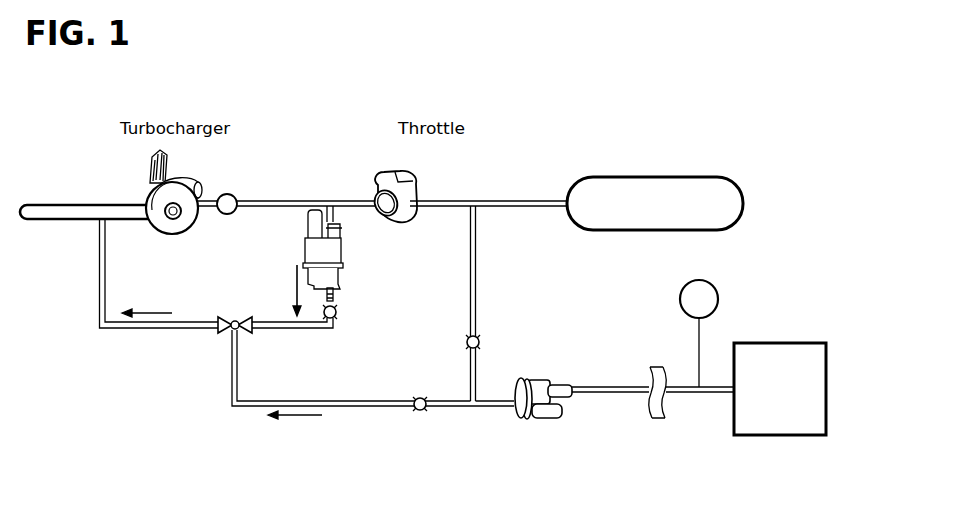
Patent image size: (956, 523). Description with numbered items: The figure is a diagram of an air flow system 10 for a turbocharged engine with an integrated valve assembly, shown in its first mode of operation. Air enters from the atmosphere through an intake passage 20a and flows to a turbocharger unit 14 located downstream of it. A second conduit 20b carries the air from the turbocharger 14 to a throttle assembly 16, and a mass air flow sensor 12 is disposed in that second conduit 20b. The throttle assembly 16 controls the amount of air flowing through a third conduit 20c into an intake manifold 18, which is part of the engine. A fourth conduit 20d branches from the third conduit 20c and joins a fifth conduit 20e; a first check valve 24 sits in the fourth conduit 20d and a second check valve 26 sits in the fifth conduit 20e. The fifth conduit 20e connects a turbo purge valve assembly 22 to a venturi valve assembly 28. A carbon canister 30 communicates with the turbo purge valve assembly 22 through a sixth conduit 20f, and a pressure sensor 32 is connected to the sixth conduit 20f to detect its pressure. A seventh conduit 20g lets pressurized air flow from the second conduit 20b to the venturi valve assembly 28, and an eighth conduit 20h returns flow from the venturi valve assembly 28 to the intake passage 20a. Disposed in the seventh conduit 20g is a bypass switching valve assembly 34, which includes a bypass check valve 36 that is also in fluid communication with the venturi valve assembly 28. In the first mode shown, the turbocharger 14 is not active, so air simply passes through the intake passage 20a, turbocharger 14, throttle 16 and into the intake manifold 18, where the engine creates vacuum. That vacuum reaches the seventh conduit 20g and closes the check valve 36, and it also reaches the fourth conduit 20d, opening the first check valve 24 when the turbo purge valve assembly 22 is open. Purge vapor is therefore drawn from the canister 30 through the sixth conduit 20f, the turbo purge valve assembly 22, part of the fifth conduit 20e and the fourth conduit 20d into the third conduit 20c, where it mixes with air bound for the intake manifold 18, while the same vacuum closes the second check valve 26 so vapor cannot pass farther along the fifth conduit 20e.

The air flow system 10 is at (131, 370).
The mass air flow sensor 12 is at (232, 195).
The turbocharger unit 14 is at (170, 183).
The throttle assembly 16 is at (385, 178).
The intake manifold 18 is at (690, 177).
The intake passage 20a is at (75, 205).
The second conduit 20b is at (310, 200).
The third conduit 20c is at (435, 200).
The fourth conduit 20d is at (476, 255).
The fifth conduit 20e is at (250, 408).
The sixth conduit 20f is at (615, 387).
The seventh conduit 20g is at (287, 330).
The eighth conduit 20h is at (100, 297).
The turbo purge valve assembly 22 is at (572, 420).
The first check valve 24 is at (480, 345).
The second check valve 26 is at (420, 397).
The venturi valve assembly 28 is at (225, 336).
The carbon canister 30 is at (783, 343).
The pressure sensor 32 is at (702, 280).
The bypass switching valve assembly 34 is at (349, 251).
The bypass check valve 36 is at (338, 313).